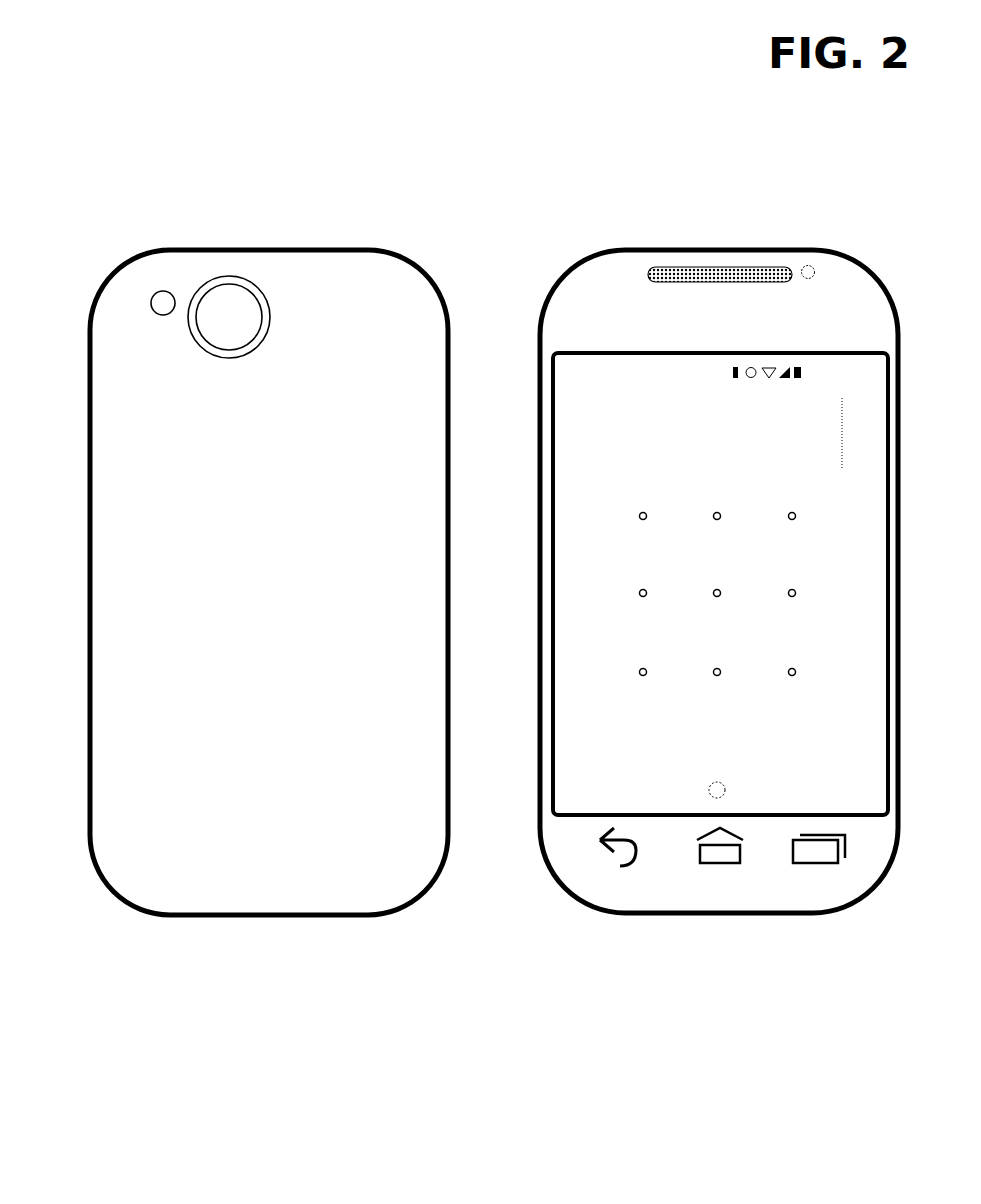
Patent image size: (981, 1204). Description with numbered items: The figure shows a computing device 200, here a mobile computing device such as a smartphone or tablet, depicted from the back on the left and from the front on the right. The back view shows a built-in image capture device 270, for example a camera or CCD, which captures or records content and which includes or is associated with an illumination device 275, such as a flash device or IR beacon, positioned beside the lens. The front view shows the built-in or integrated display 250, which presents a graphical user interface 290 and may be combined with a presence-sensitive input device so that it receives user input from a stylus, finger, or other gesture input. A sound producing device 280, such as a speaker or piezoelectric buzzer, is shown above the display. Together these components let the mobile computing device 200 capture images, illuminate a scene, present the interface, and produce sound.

The computing device 200 is at (268, 920).
The display 250 is at (587, 813).
The image capture device 270 is at (207, 278).
The illumination device 275 is at (155, 317).
The speaker 280 is at (648, 270).
The graphical user interface 290 is at (593, 718).